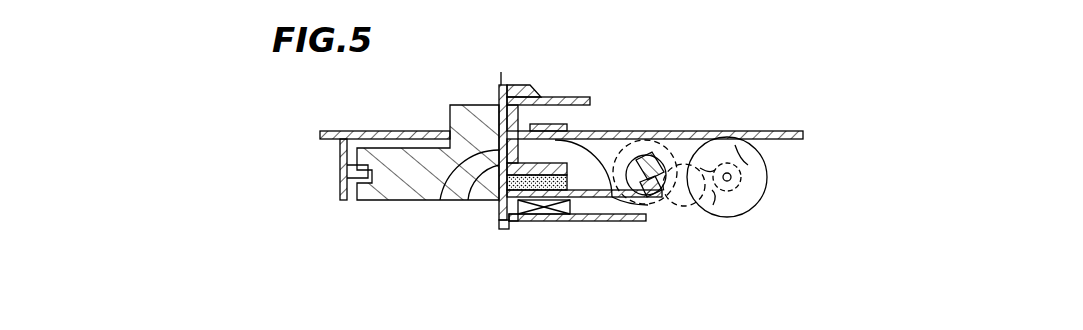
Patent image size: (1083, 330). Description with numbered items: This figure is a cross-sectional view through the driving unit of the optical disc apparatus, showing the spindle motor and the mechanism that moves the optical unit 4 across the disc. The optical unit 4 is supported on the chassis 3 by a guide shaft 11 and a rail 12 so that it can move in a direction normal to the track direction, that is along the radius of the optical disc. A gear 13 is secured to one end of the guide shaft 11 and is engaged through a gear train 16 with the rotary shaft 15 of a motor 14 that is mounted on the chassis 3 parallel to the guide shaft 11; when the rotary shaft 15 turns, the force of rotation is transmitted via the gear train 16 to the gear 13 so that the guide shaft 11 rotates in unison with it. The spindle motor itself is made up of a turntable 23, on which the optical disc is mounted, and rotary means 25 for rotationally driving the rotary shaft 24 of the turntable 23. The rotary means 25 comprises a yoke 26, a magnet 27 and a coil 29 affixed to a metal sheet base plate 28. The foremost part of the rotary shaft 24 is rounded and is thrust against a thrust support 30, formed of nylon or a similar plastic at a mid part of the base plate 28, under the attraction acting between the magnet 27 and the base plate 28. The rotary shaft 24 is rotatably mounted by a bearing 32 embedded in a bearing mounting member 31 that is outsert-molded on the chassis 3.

The chassis 3 is at (790, 131).
The optical unit 4 is at (452, 108).
The guide shaft 11 is at (655, 197).
The rail 12 is at (345, 176).
The gear 13 is at (648, 140).
The motor 14 is at (768, 180).
The rotary shaft 15 is at (733, 165).
The gear train 16 is at (700, 152).
The turntable 23 is at (571, 97).
The rotary shaft 24 is at (497, 212).
The rotary means 25 is at (500, 238).
The yoke 26 is at (470, 190).
The magnet 27 is at (483, 205).
The metal sheet base plate 28 is at (550, 216).
The coil 29 is at (590, 222).
The thrust support 30 is at (507, 230).
The bearing mounting member 31 is at (622, 208).
The bearing 32 is at (512, 112).